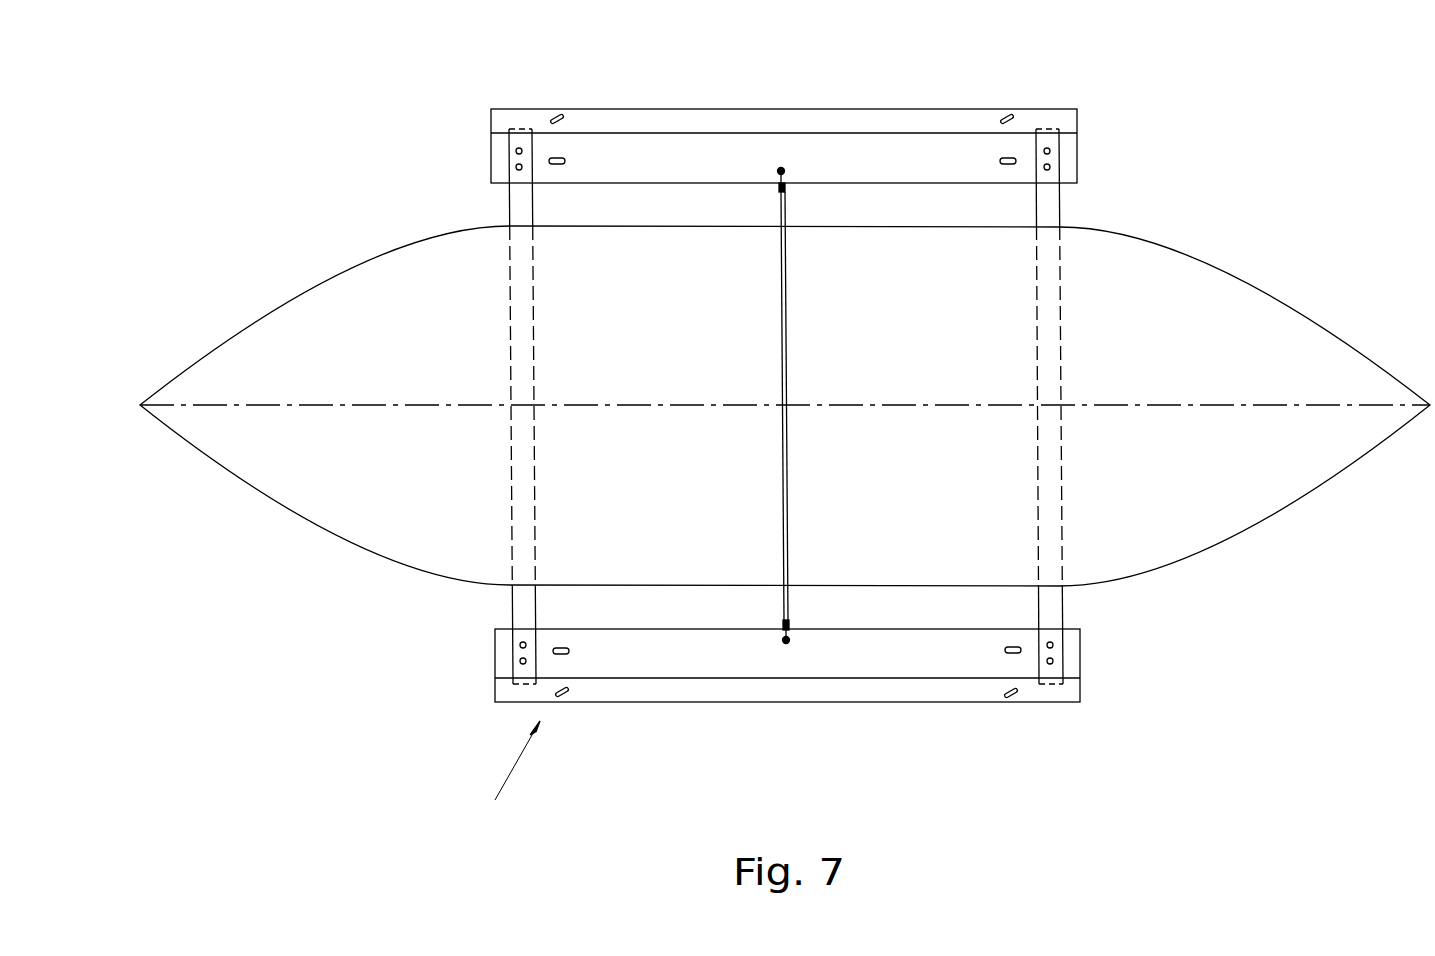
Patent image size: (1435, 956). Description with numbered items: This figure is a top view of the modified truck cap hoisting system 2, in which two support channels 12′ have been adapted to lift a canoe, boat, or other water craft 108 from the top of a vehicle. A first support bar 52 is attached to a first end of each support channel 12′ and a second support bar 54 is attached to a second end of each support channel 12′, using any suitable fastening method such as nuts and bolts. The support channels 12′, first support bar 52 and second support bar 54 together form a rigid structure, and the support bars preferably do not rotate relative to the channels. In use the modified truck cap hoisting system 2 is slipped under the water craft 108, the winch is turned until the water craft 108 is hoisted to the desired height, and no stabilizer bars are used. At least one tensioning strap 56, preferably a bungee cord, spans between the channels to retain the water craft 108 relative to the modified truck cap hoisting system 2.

The modified truck cap hoisting system 2 is at (507, 781).
The support channel 12′ is at (692, 109).
The first support bar 52 is at (505, 162).
The second support bar 54 is at (1036, 200).
The tensioning strap 56 is at (786, 510).
The water craft 108 is at (1210, 267).